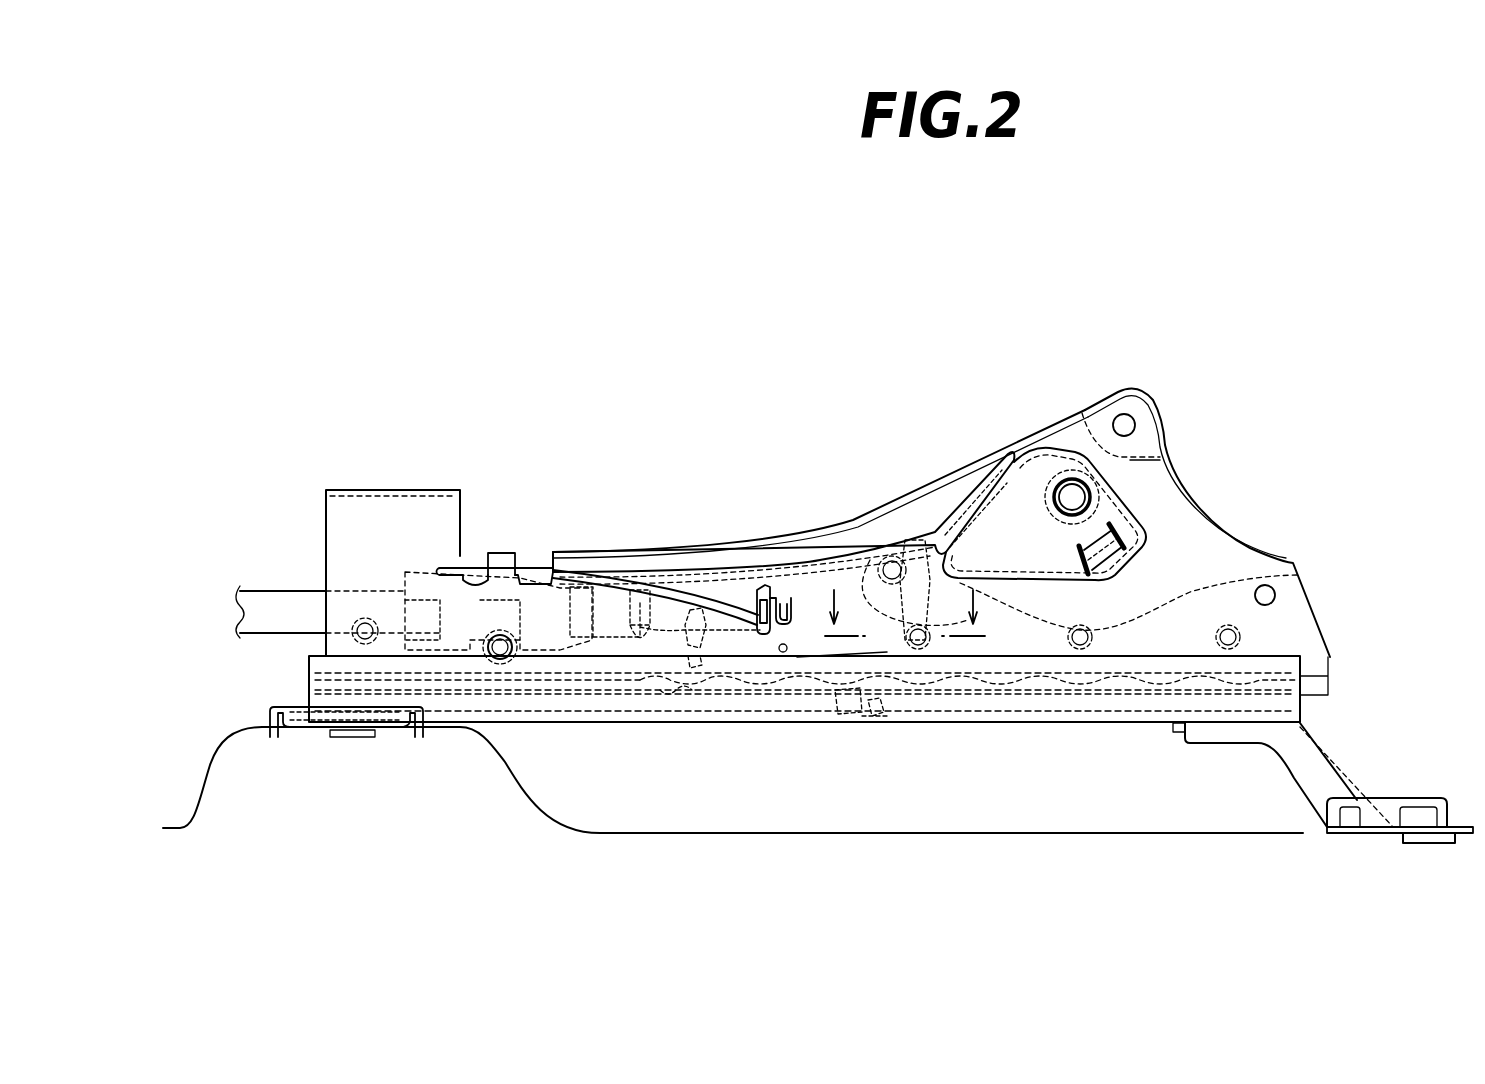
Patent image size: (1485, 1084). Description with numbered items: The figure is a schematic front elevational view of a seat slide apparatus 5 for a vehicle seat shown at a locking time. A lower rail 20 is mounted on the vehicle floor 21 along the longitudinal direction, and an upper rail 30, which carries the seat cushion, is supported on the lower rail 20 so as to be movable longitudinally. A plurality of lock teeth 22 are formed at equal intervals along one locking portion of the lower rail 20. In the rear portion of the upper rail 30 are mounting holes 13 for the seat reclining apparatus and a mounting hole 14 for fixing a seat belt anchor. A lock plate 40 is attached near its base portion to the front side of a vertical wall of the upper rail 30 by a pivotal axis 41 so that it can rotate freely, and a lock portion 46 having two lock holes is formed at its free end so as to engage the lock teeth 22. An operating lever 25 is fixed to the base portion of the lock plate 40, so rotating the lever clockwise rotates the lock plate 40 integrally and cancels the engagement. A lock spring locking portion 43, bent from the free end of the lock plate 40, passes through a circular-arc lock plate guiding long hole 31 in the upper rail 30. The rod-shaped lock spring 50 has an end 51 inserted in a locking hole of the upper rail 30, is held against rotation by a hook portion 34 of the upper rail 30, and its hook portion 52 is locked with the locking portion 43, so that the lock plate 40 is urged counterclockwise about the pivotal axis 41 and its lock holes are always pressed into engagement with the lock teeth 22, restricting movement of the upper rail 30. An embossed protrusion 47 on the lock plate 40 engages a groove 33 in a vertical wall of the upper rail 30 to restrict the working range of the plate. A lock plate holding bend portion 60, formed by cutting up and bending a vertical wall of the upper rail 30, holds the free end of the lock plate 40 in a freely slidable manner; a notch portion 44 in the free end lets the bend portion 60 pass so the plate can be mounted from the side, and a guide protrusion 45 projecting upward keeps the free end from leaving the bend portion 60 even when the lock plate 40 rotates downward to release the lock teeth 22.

The seat slide apparatus 5 is at (967, 436).
The mounting hole 13 is at (1135, 425).
The mounting hole 14 is at (1070, 492).
The lower rail 20 is at (818, 703).
The floor 21 is at (1123, 843).
The lock tooth 22 is at (968, 695).
The operating lever 25 is at (290, 623).
The upper rail 30 is at (853, 550).
The lock plate guiding long hole 31 is at (740, 600).
The groove 33 is at (683, 665).
The hook portion 34 is at (500, 553).
The lock plate 40 is at (612, 585).
The pivotal axis 41 is at (503, 660).
The lock spring locking portion 43 is at (760, 588).
The notch portion 44 is at (890, 700).
The guide protrusion 45 is at (888, 558).
The lock portion 46 is at (845, 693).
The embossed protrusion 47 is at (640, 588).
The lock spring 50 is at (682, 593).
The end 51 is at (440, 566).
The hook portion 52 is at (785, 597).
The lock plate holding bend portion 60 is at (910, 540).